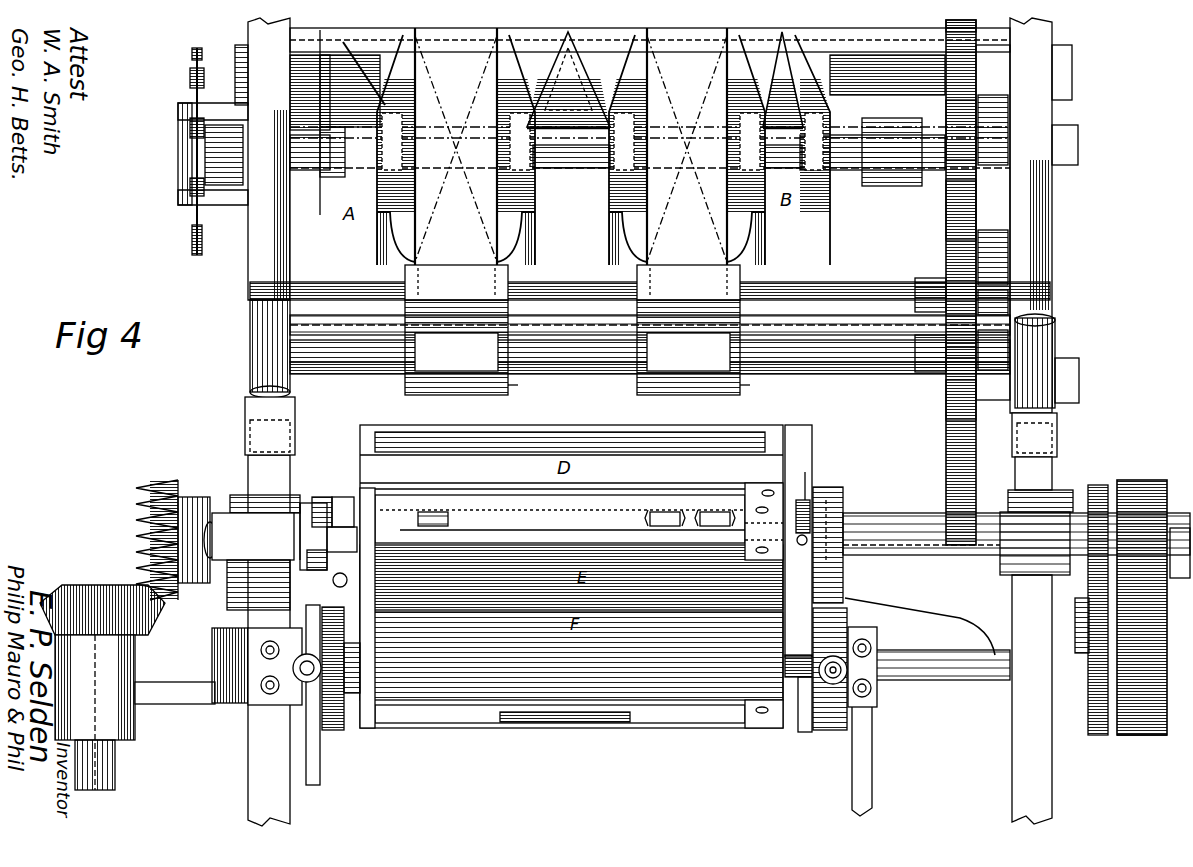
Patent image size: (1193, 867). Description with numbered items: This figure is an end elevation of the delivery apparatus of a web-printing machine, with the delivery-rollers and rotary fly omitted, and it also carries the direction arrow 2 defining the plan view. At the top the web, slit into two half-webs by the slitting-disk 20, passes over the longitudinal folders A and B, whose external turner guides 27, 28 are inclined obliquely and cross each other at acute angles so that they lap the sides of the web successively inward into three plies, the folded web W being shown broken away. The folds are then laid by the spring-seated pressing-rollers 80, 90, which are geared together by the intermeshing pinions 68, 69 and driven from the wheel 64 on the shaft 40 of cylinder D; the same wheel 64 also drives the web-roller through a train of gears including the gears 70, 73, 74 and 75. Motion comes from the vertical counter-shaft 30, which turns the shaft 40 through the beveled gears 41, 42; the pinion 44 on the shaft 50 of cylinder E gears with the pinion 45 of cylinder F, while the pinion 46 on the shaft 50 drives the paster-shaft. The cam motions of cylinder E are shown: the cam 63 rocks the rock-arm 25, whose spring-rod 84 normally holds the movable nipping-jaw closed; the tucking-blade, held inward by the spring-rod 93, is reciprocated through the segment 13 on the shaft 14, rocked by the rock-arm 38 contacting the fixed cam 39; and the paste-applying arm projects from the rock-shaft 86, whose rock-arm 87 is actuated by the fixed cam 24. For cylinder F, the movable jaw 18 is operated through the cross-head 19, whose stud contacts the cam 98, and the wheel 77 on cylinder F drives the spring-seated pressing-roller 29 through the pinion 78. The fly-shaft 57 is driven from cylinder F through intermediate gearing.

The slitting-disk 20 is at (568, 12).
The gear of train 75 is at (946, 25).
The gear of train 74 is at (976, 122).
The gear of train 73 is at (976, 216).
The external turner guide 28 is at (690, 165).
The external turner guide 27 is at (712, 213).
The pressing-roller 90 is at (572, 330).
The pressing-roller 80 is at (638, 387).
The pinion 69 is at (930, 295).
The pinion 68 is at (930, 353).
The gear of train 70 is at (946, 405).
The wheel 64 is at (946, 458).
The arrow 2 is at (458, 432).
The rock-arm 87 is at (322, 497).
The fixed cam 39 is at (310, 500).
The rock-shaft 86 is at (347, 497).
The spring-rod 84 is at (806, 506).
The rock-arm 25 is at (832, 520).
The shaft of cylinder D 40 is at (880, 515).
The pinion 46 is at (1100, 488).
The pinion 44 is at (1136, 486).
The beveled gear 42 is at (138, 535).
The fixed cam 24 is at (268, 510).
The rock-arm 38 is at (310, 550).
The segment 13 is at (440, 528).
The shaft 14 is at (560, 519).
The cam 63 is at (828, 545).
The shaft of cylinder E 50 is at (921, 546).
The beveled gear 41 is at (68, 590).
The spring-rod 93 is at (341, 590).
The cam 98 is at (845, 669).
The pinion 78 is at (360, 666).
The pressing-roller 29 is at (571, 656).
The fly-shaft 57 is at (927, 639).
The vertical counter-shaft 30 is at (115, 761).
The movable jaw 18 is at (478, 722).
The cross-head 19 is at (802, 712).
The wheel 77 is at (333, 730).
The pinion 45 is at (1135, 735).